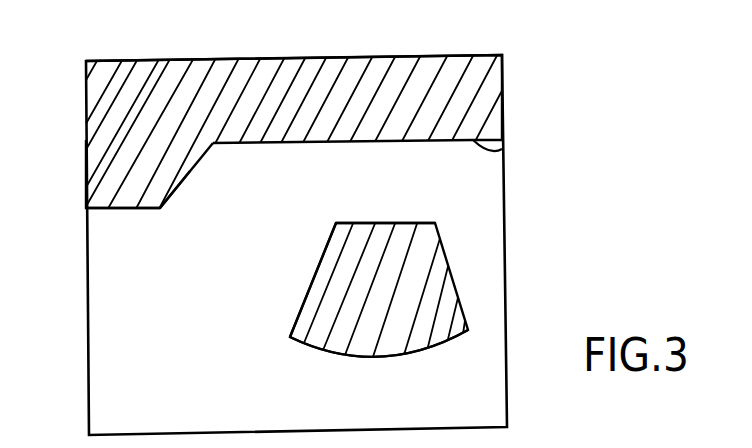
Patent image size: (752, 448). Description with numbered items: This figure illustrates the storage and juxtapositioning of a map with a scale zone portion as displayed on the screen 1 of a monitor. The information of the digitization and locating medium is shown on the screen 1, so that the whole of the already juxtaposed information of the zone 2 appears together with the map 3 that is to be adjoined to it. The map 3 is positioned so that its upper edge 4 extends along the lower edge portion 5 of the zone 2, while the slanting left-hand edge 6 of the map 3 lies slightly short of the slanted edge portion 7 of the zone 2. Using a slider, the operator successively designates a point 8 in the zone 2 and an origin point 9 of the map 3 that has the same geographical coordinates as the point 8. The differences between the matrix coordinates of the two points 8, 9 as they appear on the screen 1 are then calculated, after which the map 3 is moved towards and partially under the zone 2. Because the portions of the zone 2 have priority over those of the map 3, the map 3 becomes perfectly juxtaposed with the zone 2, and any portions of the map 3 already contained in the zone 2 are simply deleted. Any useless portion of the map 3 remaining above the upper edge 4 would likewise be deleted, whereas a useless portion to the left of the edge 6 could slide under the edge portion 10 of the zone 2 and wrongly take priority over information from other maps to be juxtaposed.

The screen 1 is at (505, 177).
The zone 2 is at (283, 77).
The map 3 is at (427, 278).
The upper edge 4 is at (397, 223).
The lower edge portion 5 is at (503, 148).
The slanting left-hand edge 6 is at (318, 268).
The slanted edge portion 7 is at (162, 205).
The point 8 is at (157, 202).
The origin point 9 is at (340, 330).
The edge portion 10 is at (133, 208).